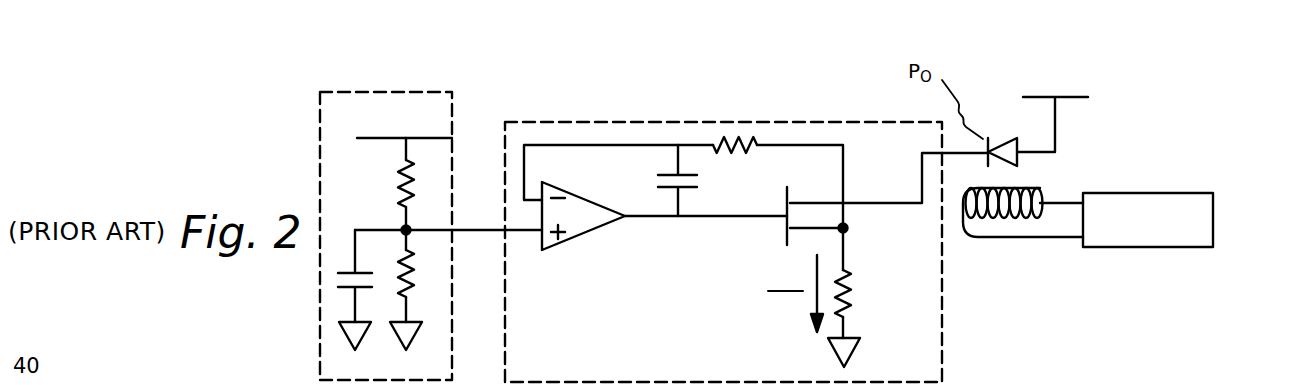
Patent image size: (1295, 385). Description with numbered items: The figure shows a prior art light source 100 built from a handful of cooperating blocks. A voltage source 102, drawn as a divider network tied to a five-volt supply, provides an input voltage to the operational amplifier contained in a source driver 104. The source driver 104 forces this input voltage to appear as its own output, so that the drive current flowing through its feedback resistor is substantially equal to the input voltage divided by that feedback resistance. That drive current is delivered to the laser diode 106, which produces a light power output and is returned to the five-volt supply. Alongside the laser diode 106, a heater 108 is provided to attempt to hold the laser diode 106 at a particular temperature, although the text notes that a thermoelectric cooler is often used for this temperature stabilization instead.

The prior art light source 100 is at (1186, 126).
The voltage source 102 is at (406, 92).
The source driver 104 is at (610, 122).
The laser diode 106 is at (1011, 137).
The heater 108 is at (1214, 206).